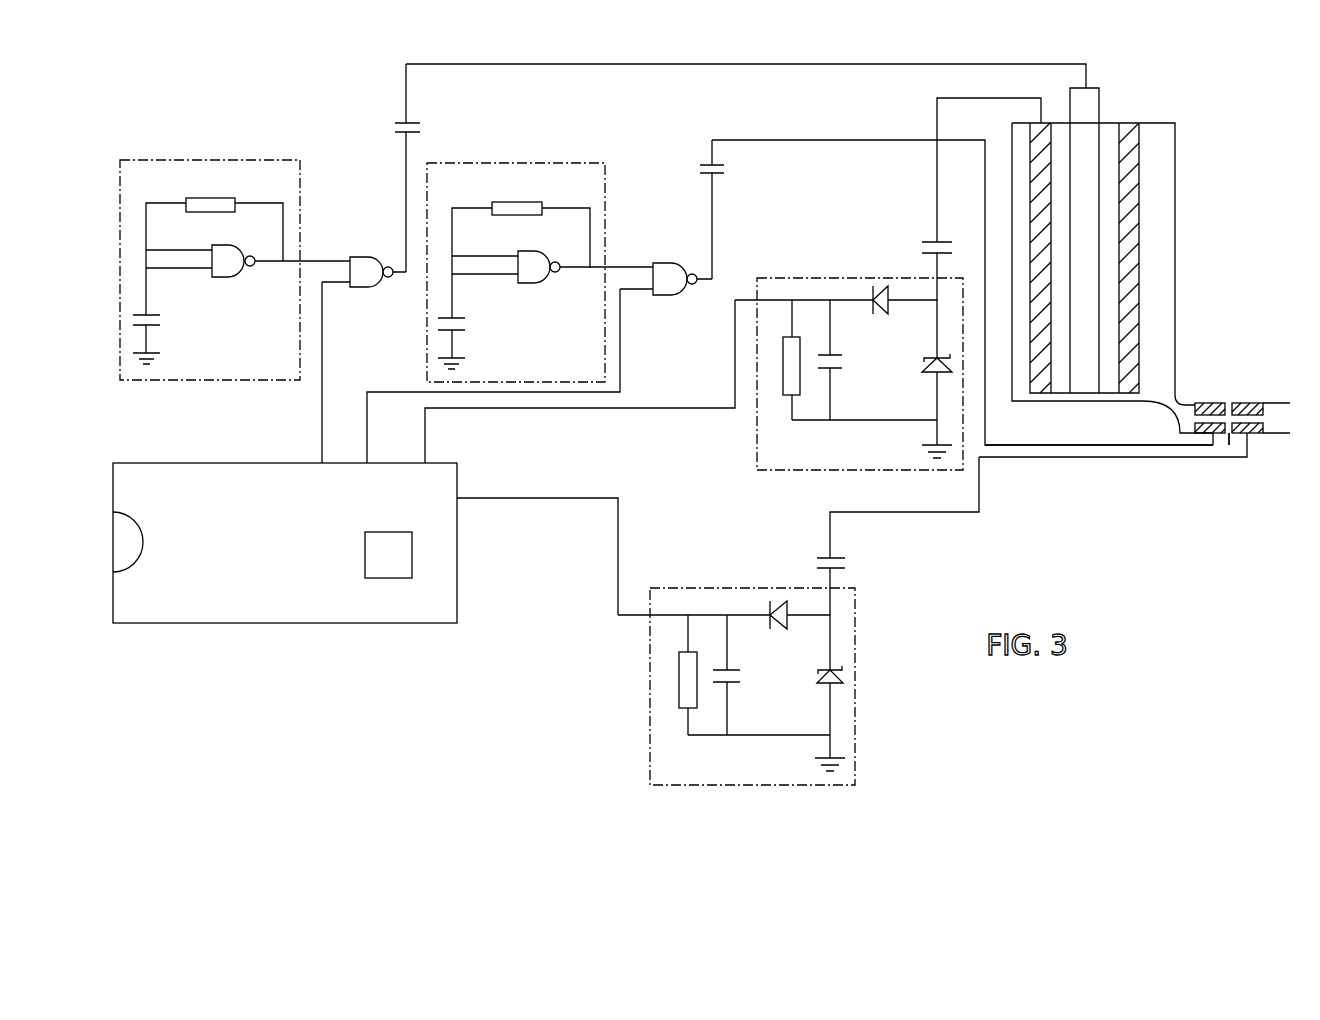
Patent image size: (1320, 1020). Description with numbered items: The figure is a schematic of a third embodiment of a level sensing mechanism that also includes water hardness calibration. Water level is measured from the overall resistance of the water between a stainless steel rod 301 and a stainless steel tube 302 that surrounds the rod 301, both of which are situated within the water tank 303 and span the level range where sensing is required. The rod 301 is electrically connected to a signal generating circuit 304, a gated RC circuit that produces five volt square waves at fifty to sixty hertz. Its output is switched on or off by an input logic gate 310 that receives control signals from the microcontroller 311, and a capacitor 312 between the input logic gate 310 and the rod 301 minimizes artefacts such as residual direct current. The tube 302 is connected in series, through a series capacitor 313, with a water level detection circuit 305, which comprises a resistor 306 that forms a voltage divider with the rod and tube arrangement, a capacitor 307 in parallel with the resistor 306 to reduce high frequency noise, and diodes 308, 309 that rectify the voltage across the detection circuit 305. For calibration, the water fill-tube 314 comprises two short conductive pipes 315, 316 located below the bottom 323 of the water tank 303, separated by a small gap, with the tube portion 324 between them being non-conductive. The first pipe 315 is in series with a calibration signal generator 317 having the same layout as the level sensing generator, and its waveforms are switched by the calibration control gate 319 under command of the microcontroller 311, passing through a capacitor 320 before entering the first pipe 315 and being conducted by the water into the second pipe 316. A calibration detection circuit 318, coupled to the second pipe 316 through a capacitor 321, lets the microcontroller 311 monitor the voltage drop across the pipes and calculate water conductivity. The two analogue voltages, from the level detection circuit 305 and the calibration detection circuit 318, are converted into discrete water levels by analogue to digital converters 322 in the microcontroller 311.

The stainless steel rod 301 is at (1095, 99).
The stainless steel tube 302 is at (1141, 157).
The water tank 303 is at (1176, 197).
The signal generating circuit 304 is at (203, 152).
The water level detection circuit 305 is at (817, 374).
The resistor 306 is at (785, 393).
The capacitor 307 is at (833, 370).
The diode 308 is at (867, 293).
The diode 309 is at (925, 375).
The input logic gate 310 is at (362, 256).
The microcontroller 311 is at (203, 625).
The capacitor 312 is at (403, 122).
The series capacitor 313 is at (928, 242).
The water fill-tube 314 is at (1290, 437).
The first conductive pipe 315 is at (1214, 403).
The second conductive pipe 316 is at (1248, 403).
The calibration signal generator 317 is at (503, 155).
The calibration detection circuit 318 is at (648, 750).
The calibration control gate 319 is at (668, 262).
The capacitor 320 is at (705, 165).
The capacitor 321 is at (845, 557).
The analogue to digital converters 322 is at (378, 578).
The bottom of the water tank 323 is at (1025, 445).
The tube portion 324 is at (1230, 437).